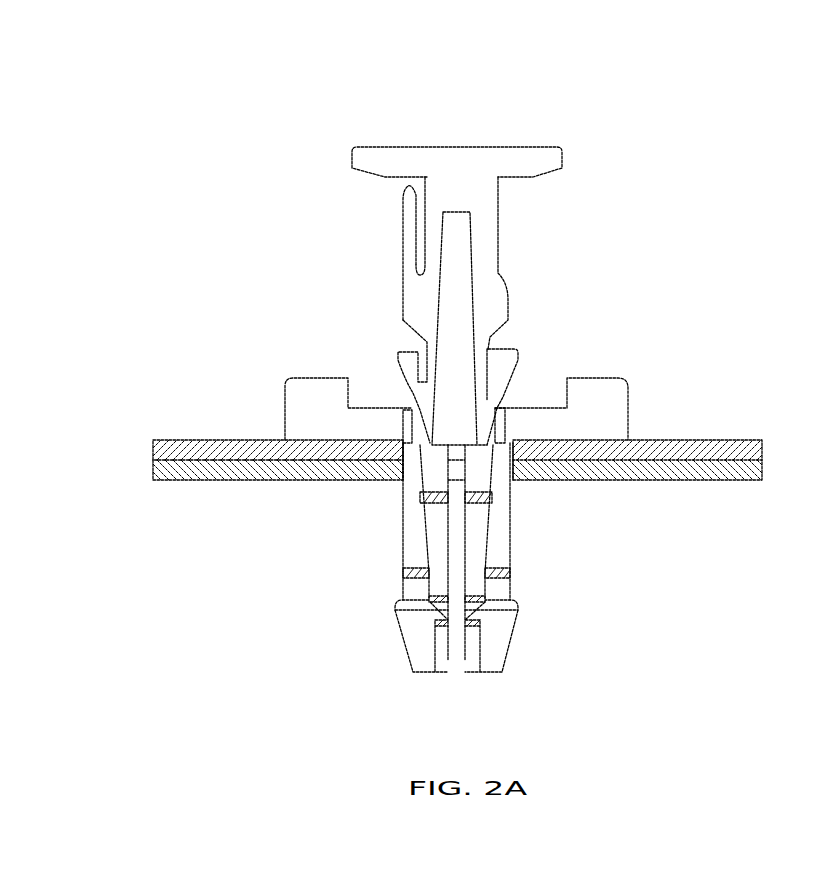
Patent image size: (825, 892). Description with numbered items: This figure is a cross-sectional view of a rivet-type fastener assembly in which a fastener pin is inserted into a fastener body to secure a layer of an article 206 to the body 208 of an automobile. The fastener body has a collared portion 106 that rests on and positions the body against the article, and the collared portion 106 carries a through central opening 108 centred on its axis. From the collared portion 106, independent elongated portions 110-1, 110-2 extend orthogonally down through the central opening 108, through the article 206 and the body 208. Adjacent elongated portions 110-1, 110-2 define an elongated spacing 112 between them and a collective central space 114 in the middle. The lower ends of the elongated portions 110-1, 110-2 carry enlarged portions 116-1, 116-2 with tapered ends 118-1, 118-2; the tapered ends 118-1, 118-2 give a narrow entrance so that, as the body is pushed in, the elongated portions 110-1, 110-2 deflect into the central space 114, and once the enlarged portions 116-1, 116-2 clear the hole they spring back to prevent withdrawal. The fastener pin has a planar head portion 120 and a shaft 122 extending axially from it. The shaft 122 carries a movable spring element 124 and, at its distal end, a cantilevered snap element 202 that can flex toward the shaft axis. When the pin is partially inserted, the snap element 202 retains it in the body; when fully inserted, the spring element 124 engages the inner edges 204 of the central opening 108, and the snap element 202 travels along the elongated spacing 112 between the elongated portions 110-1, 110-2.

The head portion 120 is at (381, 146).
The shaft 122 is at (495, 243).
The spring element 124 is at (405, 229).
The cantilevered snap element 202 is at (402, 350).
The central opening 108 is at (503, 399).
The collared portion 106 is at (618, 376).
The article 206 is at (687, 440).
The body 208 is at (687, 480).
The inner edges 204 is at (406, 431).
The elongated portion 110-1 is at (410, 527).
The elongated portion 110-2 is at (510, 510).
The enlarged portion 116-1 is at (398, 617).
The enlarged portion 116-2 is at (515, 613).
The tapered end 118-1 is at (405, 650).
The tapered end 118-2 is at (502, 657).
The elongated spacing 112 is at (452, 658).
The central space 114 is at (460, 690).